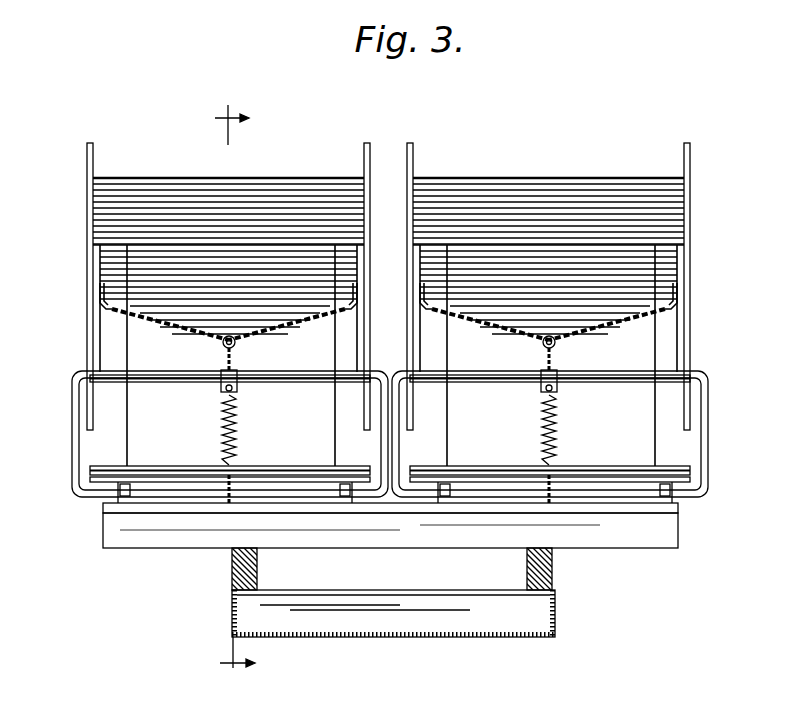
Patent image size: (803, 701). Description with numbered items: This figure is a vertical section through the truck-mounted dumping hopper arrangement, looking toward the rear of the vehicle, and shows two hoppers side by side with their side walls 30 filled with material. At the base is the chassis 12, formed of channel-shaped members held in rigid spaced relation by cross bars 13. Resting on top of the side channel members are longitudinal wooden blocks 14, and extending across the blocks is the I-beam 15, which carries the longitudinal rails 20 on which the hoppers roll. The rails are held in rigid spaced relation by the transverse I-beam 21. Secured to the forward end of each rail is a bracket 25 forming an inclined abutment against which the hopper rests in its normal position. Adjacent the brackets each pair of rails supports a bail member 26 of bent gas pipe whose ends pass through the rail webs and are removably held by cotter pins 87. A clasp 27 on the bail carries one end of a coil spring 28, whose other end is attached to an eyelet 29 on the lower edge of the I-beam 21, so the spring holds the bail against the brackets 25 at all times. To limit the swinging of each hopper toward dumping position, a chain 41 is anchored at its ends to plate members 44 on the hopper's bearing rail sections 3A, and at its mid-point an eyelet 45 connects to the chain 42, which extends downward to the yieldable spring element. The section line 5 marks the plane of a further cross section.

The bin side wall 3A is at (100, 352).
The side walls 30 is at (268, 182).
The plate members 44 is at (99, 294).
The chain 41 is at (178, 326).
The eyelet 45 is at (230, 336).
The chain 42 is at (234, 364).
The bail member 26 is at (180, 375).
The clasp 27 is at (220, 382).
The coil spring 28 is at (238, 432).
The bracket 25 is at (112, 447).
The I-beam 21 is at (276, 498).
The cotter pins 87 is at (131, 491).
The eyelet 29 is at (233, 500).
The rails 20 is at (118, 505).
The I-beam 15 is at (158, 530).
The blocks 14 is at (242, 572).
The chassis 12 is at (231, 612).
The cross bars 13 is at (470, 615).
The section line 5 is at (235, 391).